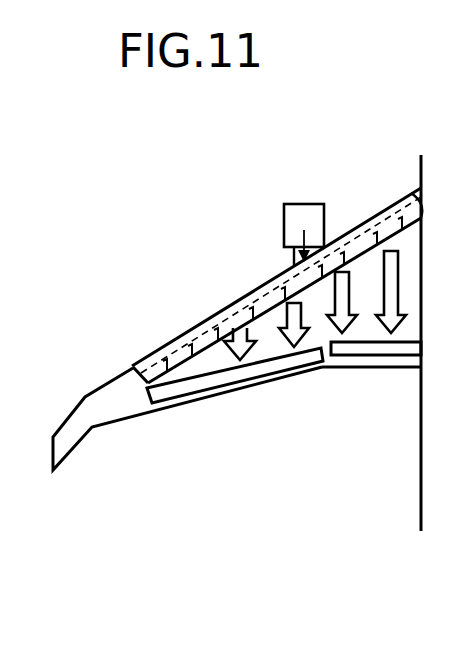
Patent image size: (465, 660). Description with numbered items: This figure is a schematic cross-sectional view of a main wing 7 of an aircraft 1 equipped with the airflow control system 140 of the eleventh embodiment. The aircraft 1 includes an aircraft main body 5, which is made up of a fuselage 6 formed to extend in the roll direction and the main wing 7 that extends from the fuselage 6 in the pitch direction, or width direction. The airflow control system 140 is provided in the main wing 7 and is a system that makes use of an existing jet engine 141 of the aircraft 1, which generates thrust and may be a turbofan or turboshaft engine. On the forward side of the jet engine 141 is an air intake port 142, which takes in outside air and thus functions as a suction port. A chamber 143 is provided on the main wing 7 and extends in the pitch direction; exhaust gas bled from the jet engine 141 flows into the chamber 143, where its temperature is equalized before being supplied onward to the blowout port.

The aircraft 1 is at (249, 561).
The aircraft main body 5 is at (328, 474).
The fuselage 6 is at (421, 455).
The main wing 7 is at (103, 427).
The airflow control system 140 is at (96, 327).
The jet engine 141 is at (285, 205).
The air intake port 142 is at (312, 204).
The chamber 143 is at (130, 370).